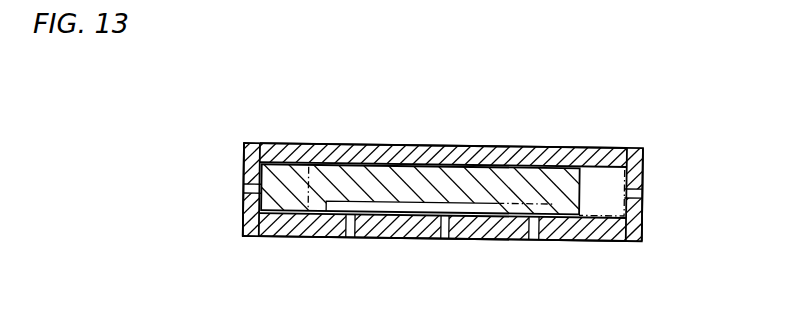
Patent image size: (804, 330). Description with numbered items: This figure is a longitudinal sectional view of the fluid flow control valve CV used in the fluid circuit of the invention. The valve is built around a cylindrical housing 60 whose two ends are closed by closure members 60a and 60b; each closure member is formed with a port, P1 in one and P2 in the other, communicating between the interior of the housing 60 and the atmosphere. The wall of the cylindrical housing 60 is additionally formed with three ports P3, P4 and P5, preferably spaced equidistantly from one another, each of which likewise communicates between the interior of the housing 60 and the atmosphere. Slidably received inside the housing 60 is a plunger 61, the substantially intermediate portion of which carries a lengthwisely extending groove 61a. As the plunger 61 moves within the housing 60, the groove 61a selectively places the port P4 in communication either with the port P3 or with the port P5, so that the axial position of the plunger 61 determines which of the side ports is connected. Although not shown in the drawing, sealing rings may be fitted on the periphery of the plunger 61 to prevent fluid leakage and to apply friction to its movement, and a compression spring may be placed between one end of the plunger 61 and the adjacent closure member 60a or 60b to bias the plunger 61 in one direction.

The cylindrical housing 60 is at (538, 148).
The closure member 60a is at (634, 148).
The closure member 60b is at (247, 152).
The fluid flow control valve CV is at (310, 140).
The plunger 61 is at (467, 173).
The lengthwisely extending groove 61a is at (370, 206).
The port P1 is at (260, 187).
The port P2 is at (628, 193).
The port P3 is at (350, 239).
The port P4 is at (443, 240).
The port P5 is at (536, 241).